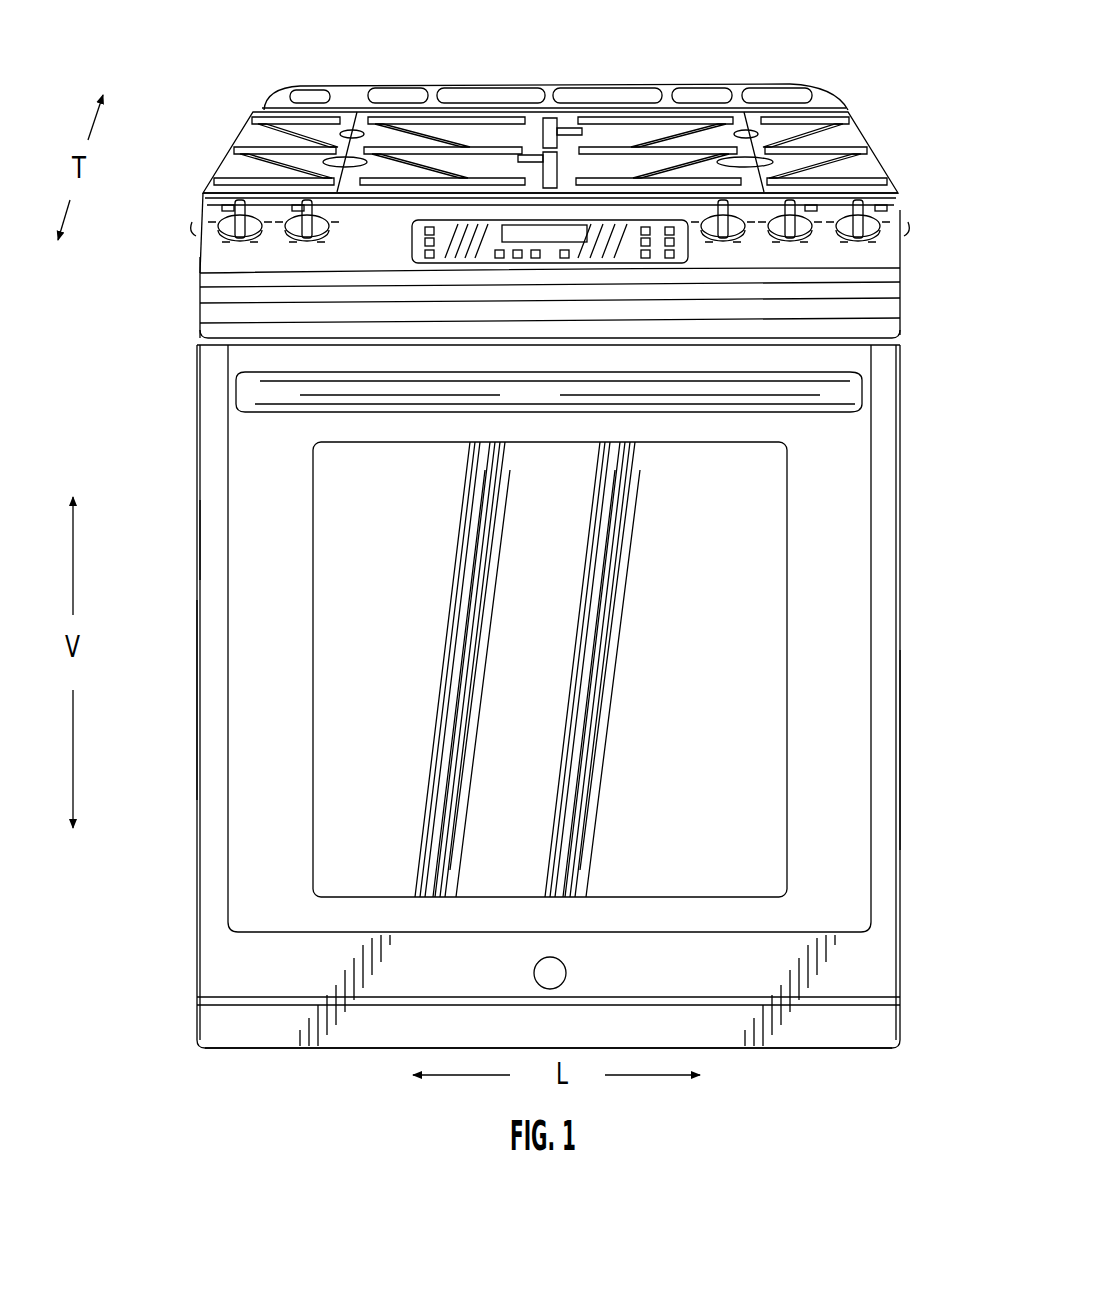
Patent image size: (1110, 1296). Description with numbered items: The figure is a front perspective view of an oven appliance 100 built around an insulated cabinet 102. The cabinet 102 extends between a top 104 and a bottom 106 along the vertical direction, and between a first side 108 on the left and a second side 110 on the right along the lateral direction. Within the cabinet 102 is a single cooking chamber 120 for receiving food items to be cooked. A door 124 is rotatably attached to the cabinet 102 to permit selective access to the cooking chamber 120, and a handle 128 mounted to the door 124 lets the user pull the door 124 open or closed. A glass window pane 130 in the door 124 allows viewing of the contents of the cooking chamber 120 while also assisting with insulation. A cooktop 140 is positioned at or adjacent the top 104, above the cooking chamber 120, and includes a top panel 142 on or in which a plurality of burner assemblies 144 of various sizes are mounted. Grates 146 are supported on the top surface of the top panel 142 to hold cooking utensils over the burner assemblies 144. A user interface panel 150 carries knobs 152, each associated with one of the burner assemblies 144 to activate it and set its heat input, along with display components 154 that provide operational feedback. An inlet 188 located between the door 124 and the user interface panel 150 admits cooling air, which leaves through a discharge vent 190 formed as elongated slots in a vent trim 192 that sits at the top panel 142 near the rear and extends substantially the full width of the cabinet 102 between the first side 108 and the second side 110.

The oven appliance 100 is at (188, 83).
The insulated cabinet 102 is at (905, 328).
The top 104 is at (194, 246).
The bottom 106 is at (193, 1043).
The first side 108 is at (194, 708).
The second side 110 is at (910, 746).
The cooking chamber 120 is at (834, 494).
The door 124 is at (210, 540).
The handle 128 is at (848, 387).
The glass window pane 130 is at (690, 875).
The cooktop 140 is at (838, 104).
The top panel 142 is at (888, 203).
The burner assemblies 144 is at (356, 118).
The grates 146 is at (230, 152).
The user interface panel 150 is at (416, 260).
The knobs 152 is at (258, 222).
The display components 154 is at (571, 230).
The inlet 188 is at (850, 332).
The discharge vent 190 is at (491, 92).
The vent trim 192 is at (668, 85).